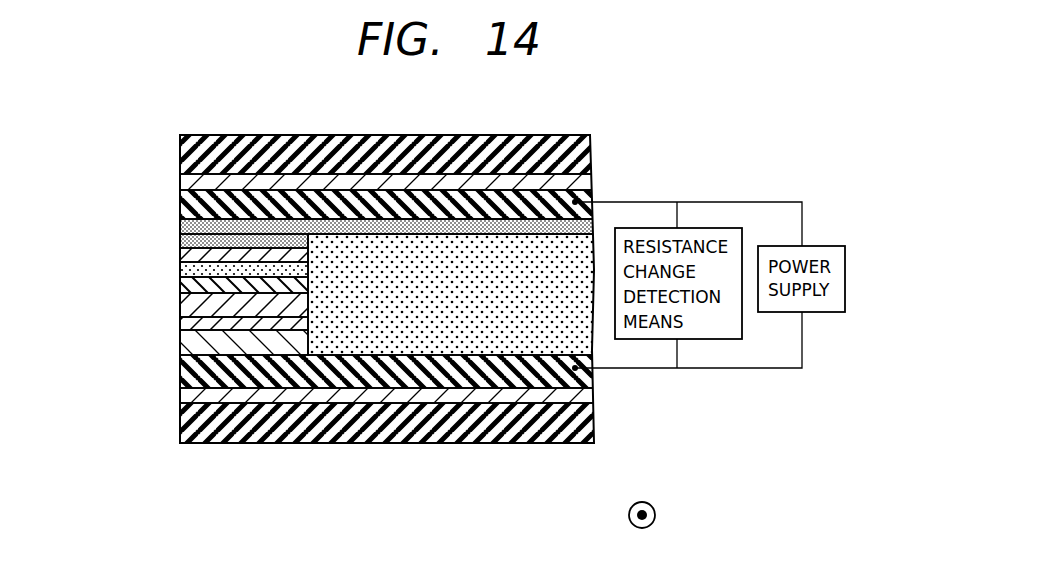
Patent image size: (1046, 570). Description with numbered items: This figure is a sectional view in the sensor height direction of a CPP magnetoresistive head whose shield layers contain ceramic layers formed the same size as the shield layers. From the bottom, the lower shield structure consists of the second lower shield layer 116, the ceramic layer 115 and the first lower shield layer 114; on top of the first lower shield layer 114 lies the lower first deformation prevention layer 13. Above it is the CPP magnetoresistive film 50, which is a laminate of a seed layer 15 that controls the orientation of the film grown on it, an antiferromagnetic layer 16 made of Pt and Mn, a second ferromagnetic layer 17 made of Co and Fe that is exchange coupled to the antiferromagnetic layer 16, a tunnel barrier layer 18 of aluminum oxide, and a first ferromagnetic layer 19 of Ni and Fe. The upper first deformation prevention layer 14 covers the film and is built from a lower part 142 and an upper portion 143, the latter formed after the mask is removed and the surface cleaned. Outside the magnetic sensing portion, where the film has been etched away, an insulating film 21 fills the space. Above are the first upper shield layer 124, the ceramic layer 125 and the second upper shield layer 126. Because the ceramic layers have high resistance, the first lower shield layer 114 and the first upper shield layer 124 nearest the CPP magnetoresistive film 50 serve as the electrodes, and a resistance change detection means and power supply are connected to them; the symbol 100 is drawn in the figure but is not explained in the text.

The second upper shield layer 126 is at (181, 152).
The ceramic layer 125 is at (181, 183).
The first upper shield layer 124 is at (181, 208).
The upper first deformation prevention layer 14 is at (312, 241).
The lower part of the upper first deformation prevention layer 142 is at (181, 227).
The upper portion of the upper first deformation prevention layer 143 is at (181, 243).
The insulating film 21 is at (452, 288).
The CPP magnetoresistive film 50 is at (224, 292).
The first ferromagnetic layer 19 is at (251, 257).
The tunnel barrier layer 18 is at (287, 264).
The second ferromagnetic layer 17 is at (293, 288).
The antiferromagnetic layer 16 is at (258, 305).
The seed layer 15 is at (220, 330).
The lower first deformation prevention layer 13 is at (181, 345).
The first lower shield layer 114 is at (181, 371).
The ceramic layer 115 is at (181, 396).
The second lower shield layer 116 is at (181, 421).
The current direction 100 is at (642, 502).